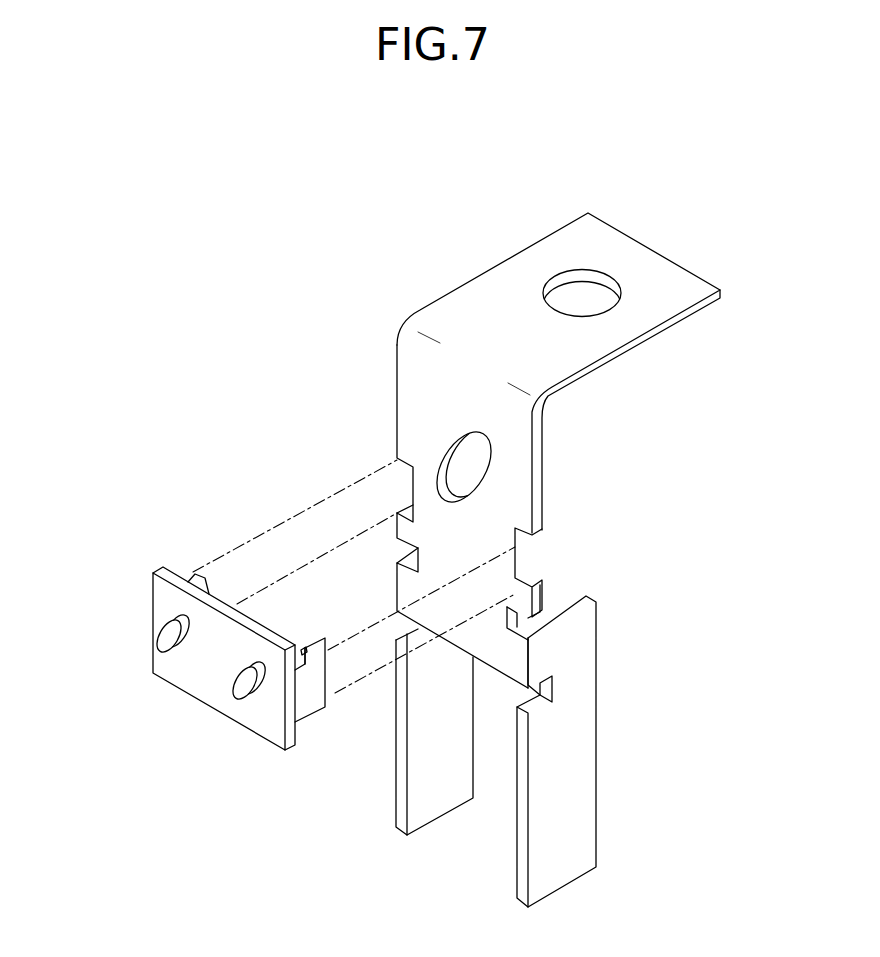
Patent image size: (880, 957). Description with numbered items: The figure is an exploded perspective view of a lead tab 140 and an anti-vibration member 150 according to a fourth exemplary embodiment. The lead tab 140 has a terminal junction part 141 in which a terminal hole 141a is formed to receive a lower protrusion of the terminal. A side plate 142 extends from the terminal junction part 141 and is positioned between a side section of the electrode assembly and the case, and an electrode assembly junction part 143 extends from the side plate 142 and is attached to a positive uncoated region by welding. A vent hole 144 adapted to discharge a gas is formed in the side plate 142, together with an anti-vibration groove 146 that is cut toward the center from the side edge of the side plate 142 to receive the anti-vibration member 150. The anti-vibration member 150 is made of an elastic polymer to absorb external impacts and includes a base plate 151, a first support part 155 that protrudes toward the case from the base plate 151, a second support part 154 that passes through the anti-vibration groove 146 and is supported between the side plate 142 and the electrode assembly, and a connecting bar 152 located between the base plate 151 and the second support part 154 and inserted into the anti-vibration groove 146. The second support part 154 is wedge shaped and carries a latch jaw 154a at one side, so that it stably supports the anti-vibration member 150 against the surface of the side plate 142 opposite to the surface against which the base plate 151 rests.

The lead tab 140 is at (520, 534).
The terminal junction part 141 is at (566, 347).
The terminal hole 141a is at (582, 270).
The side plate 142 is at (475, 516).
The electrode assembly junction part 143 is at (575, 790).
The vent hole 144 is at (485, 465).
The anti-vibration groove 146 is at (530, 552).
The anti-vibration member 150 is at (223, 634).
The base plate 151 is at (210, 690).
The connecting bar 152 is at (319, 681).
The second support part 154 is at (320, 645).
The latch jaw 154a is at (304, 645).
The first support part 155 is at (168, 640).